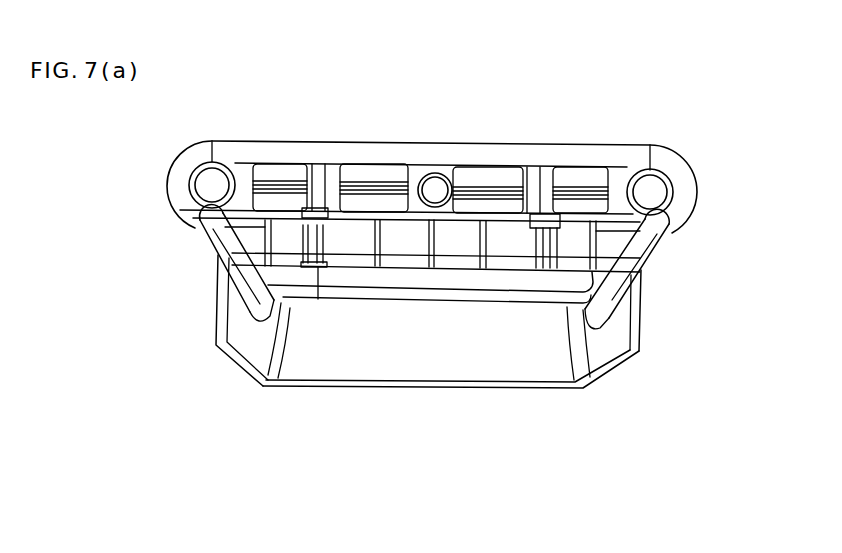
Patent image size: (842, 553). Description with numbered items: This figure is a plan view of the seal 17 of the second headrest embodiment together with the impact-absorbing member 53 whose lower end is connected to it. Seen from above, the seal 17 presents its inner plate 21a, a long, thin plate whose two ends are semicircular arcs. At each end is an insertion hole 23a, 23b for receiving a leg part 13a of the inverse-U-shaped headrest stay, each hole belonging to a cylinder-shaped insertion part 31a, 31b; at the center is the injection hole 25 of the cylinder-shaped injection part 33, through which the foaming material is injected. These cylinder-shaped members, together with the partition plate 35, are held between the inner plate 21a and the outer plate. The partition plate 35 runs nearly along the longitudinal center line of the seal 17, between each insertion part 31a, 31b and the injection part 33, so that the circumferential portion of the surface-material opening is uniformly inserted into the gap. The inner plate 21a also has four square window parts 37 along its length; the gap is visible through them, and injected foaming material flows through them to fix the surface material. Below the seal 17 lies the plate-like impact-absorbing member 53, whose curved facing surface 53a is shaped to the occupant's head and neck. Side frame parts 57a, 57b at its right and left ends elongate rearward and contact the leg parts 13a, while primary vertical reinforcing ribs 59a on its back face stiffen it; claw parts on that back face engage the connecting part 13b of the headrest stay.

The seal 17 is at (717, 196).
The inner plate 21a is at (567, 158).
The insertion hole 23a is at (652, 192).
The insertion hole 23b is at (214, 183).
The injection hole 25 is at (436, 174).
The insertion part 31a is at (641, 173).
The insertion part 31b is at (187, 180).
The injection part 33 is at (448, 168).
The partition plate 35 is at (372, 180).
The window part 37 is at (283, 170).
The primary vertical reinforcing rib 59a is at (262, 237).
The leg part 13a is at (645, 268).
The connecting part 13b is at (373, 278).
The impact-absorbing member 53 is at (549, 404).
The facing surface 53a is at (450, 358).
The side frame part 57a is at (630, 347).
The side frame part 57b is at (250, 333).